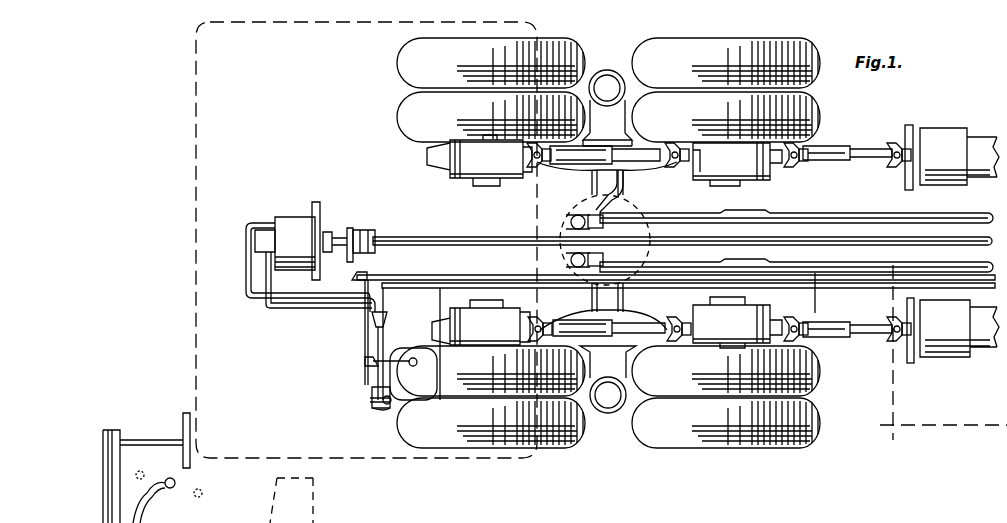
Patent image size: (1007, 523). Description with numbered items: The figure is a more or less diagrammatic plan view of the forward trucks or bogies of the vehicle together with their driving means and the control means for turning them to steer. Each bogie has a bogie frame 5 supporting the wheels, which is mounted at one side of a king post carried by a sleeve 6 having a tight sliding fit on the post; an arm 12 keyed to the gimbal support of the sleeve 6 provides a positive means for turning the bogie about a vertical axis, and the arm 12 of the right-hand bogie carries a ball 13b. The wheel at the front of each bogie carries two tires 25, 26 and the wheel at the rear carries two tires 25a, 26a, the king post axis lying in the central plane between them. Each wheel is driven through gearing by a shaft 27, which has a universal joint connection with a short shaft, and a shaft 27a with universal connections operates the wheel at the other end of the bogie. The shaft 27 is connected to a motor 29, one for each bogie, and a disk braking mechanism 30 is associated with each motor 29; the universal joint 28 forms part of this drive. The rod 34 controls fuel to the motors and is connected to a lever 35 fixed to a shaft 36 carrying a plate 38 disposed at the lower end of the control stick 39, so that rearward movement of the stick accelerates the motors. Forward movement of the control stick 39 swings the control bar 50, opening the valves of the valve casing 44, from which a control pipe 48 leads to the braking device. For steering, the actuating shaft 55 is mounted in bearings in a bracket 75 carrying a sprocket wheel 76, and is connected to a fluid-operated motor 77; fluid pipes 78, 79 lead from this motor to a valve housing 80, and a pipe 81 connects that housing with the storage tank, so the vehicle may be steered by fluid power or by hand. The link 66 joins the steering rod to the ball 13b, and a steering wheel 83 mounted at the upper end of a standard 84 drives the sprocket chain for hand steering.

The bogie frame 5 is at (570, 163).
The sleeve 6 is at (605, 72).
The arm 12 is at (624, 185).
The ball 13b is at (565, 225).
The tire 25 is at (397, 55).
The tire 25a is at (808, 42).
The tire 26 is at (397, 112).
The tire 26a is at (817, 108).
The shaft 27 is at (827, 152).
The shaft 27a is at (587, 168).
The universal joint 28 is at (549, 165).
The motor 29 is at (945, 133).
The disk braking mechanism 30 is at (908, 128).
The rod 34 is at (417, 277).
The lever 35 is at (360, 278).
The shaft 36 is at (364, 342).
The plate 38 is at (365, 362).
The control stick 39 is at (397, 353).
The valve casing 44 is at (383, 407).
The control pipe 48 is at (456, 375).
The control bar 50 is at (372, 386).
The actuating shaft 55 is at (426, 238).
The link 66 is at (858, 218).
The bracket 75 is at (364, 232).
The sprocket wheel 76 is at (350, 232).
The fluid-operated motor 77 is at (284, 215).
The fluid pipe 78 is at (292, 308).
The fluid pipe 79 is at (247, 298).
The valve housing 80 is at (386, 316).
The pipe 81 is at (478, 283).
The steering wheel 83 is at (183, 420).
The standard 84 is at (103, 493).